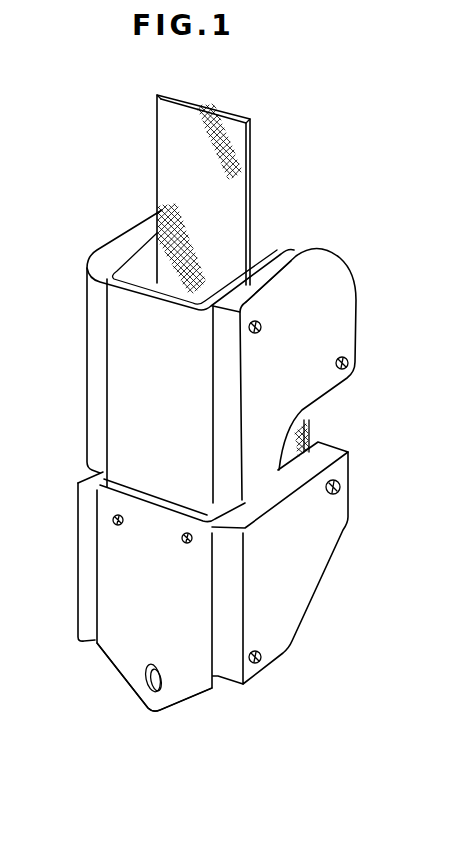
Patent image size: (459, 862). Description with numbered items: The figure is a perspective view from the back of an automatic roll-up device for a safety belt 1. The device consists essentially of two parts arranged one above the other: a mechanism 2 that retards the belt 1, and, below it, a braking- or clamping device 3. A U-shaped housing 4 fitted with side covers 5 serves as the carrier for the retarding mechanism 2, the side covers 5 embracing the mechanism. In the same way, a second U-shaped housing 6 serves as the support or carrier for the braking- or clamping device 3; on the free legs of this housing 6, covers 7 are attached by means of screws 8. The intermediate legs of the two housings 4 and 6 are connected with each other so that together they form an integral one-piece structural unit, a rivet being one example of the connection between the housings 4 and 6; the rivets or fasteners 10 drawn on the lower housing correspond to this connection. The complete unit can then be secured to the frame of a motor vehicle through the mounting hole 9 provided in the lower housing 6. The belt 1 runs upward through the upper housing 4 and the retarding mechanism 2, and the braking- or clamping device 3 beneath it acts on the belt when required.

The safety belt 1 is at (237, 183).
The mechanism 2 is at (223, 349).
The braking- or clamping device 3 is at (219, 592).
The U-shaped housing 4 is at (136, 262).
The side covers 5 is at (90, 333).
The U-shaped housing 6 is at (123, 645).
The covers 7 is at (85, 549).
The screws 8 is at (345, 487).
The mounting hole 9 is at (157, 690).
The rivets 10 is at (122, 526).